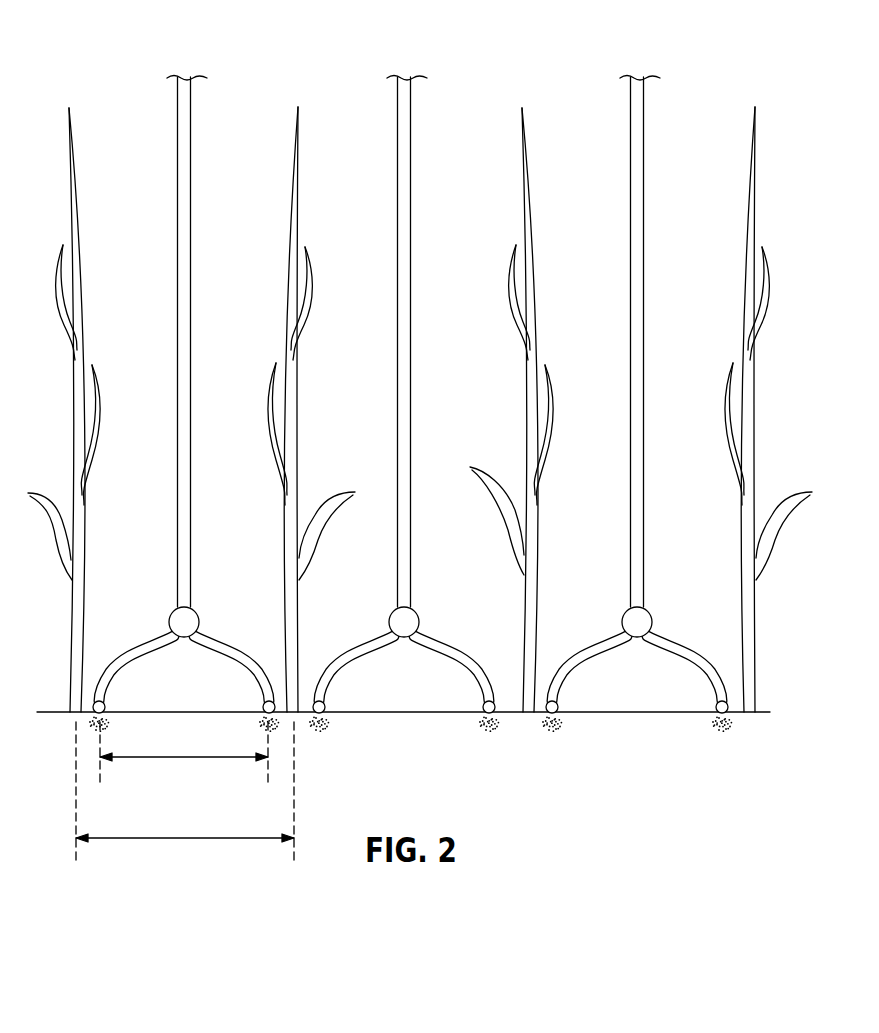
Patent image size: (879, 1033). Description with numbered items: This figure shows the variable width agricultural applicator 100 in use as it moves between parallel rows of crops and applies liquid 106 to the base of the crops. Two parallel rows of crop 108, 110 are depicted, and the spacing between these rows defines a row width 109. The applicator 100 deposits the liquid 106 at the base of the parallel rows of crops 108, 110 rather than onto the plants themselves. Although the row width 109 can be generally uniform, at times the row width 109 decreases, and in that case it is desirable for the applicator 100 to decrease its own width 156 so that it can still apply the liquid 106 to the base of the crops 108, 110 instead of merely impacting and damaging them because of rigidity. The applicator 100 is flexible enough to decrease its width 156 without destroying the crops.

The variable width agricultural applicator 100 is at (665, 215).
The liquid 106 is at (575, 737).
The crop 108 is at (770, 180).
The crop 110 is at (505, 182).
The width 156 is at (200, 757).
The row width 109 is at (215, 838).